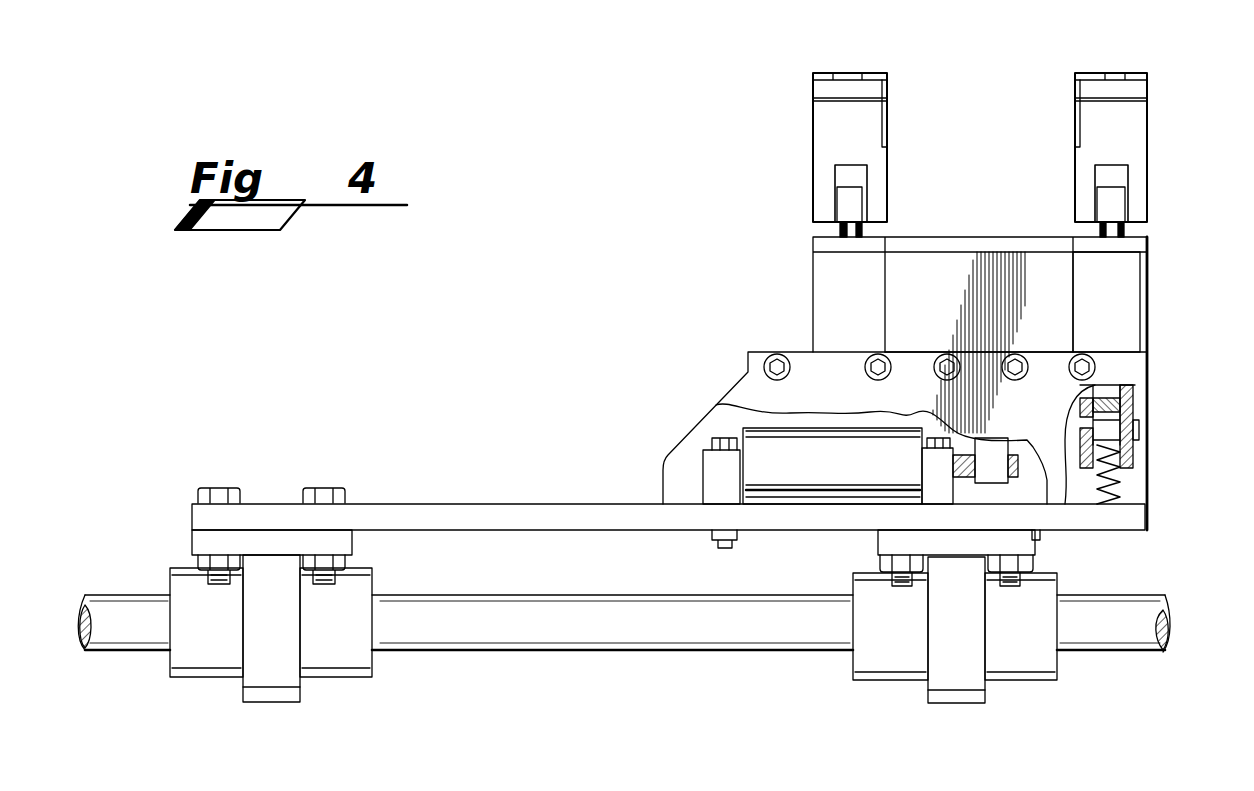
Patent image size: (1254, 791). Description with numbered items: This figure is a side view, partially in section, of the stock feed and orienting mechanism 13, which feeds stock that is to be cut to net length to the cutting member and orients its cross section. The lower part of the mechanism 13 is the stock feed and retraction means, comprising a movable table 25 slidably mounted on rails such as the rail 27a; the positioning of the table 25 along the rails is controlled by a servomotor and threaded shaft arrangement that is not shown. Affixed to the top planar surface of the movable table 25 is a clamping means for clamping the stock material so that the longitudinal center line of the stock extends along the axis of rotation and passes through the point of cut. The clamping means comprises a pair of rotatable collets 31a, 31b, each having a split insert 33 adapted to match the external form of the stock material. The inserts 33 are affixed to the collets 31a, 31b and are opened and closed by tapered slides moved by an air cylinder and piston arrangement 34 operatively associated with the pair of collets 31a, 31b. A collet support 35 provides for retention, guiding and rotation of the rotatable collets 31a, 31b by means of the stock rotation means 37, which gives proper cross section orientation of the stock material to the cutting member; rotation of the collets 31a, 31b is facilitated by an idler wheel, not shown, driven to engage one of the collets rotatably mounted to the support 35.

The stock feed and orienting mechanism 13 is at (688, 323).
The movable table 25 is at (270, 503).
The rail 27a is at (514, 630).
The rotatable collet 31a is at (1110, 87).
The rotatable collet 31b is at (845, 85).
The split insert 33 is at (888, 124).
The air cylinder and piston arrangement 34 is at (833, 472).
The collet support 35 is at (1130, 298).
The stock rotation means 37 is at (772, 191).